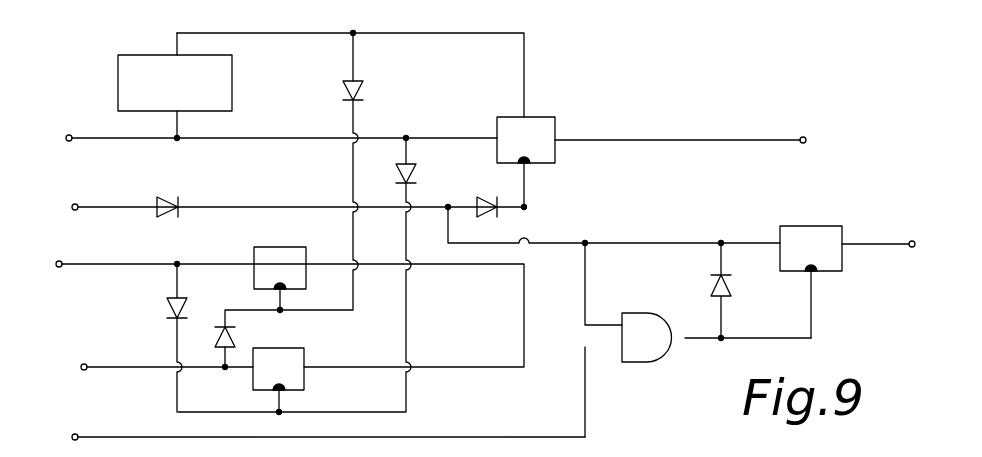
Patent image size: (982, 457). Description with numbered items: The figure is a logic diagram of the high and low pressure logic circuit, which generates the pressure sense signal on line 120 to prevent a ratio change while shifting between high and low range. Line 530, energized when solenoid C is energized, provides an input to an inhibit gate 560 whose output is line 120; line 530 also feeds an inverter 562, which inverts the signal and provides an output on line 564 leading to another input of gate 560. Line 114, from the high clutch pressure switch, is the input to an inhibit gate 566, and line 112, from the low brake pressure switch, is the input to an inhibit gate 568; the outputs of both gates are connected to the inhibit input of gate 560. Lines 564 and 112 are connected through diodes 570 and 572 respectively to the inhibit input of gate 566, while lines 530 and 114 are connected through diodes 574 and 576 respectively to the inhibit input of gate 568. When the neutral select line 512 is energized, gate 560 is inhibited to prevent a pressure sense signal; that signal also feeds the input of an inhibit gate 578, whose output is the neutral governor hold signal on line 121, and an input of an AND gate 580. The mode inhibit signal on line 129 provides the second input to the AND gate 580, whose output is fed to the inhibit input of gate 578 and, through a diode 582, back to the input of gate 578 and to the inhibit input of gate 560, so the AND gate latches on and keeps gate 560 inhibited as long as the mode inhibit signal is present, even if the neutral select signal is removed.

The inverter 562 is at (157, 58).
The line 564 is at (279, 33).
The diode 570 is at (364, 88).
The diode 574 is at (416, 180).
The inhibit gate 560 is at (549, 117).
The line 120 is at (726, 122).
The line 530 is at (93, 139).
The neutral select line 512 is at (82, 208).
The line 114 is at (147, 265).
The diode 576 is at (169, 312).
The diode 572 is at (214, 332).
The inhibit gate 566 is at (256, 231).
The inhibit gate 568 is at (298, 348).
The line 112 is at (149, 367).
The mode inhibit signal line 129 is at (112, 437).
The AND gate 580 is at (624, 313).
The diode 582 is at (729, 292).
The inhibit gate 578 is at (790, 226).
The line 121 is at (871, 244).